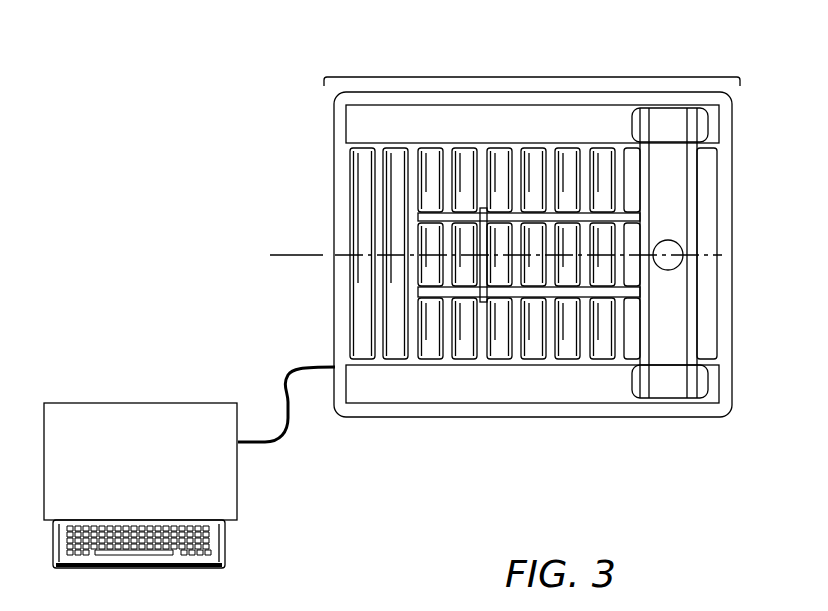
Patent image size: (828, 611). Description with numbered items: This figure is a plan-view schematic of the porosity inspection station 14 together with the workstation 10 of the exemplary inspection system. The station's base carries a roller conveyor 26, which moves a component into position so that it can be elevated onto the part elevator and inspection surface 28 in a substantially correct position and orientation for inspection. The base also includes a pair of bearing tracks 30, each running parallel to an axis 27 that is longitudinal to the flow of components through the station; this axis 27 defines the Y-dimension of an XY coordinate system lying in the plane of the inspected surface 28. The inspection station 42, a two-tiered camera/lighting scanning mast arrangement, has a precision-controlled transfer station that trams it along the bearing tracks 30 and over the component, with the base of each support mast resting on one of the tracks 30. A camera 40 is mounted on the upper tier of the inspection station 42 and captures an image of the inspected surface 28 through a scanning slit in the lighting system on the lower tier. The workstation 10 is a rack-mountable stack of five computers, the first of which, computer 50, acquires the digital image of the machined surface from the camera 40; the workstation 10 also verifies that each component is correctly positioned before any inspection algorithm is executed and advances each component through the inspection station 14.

The workstation 10 is at (145, 410).
The porosity inspection station 14 is at (528, 77).
The roller conveyor 26 is at (395, 179).
The axis 27 is at (283, 255).
The part elevator and inspection surface 28 is at (425, 291).
The bearing tracks 30 is at (350, 118).
The camera 40 is at (672, 255).
The inspection station 42 is at (670, 108).
The computer 50 is at (228, 490).